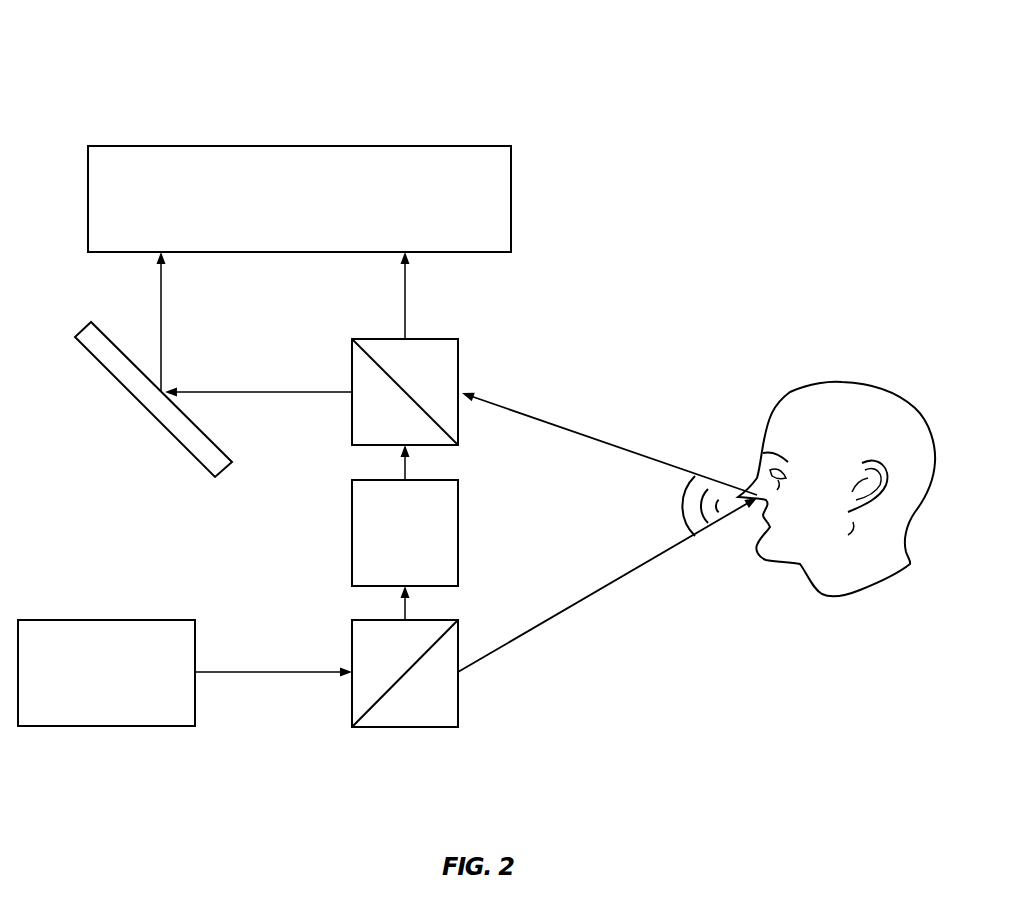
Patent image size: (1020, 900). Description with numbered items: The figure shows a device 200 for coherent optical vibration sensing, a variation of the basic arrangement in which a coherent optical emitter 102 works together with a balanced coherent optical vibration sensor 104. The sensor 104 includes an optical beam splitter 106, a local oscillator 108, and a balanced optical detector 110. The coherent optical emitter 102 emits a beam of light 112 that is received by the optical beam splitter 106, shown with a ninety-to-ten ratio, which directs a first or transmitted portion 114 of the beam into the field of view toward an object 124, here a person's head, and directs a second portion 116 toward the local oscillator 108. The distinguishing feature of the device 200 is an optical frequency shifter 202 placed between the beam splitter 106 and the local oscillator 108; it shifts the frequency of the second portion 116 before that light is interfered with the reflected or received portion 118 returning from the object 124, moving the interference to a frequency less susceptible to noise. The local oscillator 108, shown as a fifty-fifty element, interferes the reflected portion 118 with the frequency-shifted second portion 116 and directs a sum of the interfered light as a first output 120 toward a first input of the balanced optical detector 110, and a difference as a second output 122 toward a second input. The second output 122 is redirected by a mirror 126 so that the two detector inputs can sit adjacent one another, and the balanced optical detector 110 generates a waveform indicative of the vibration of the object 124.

The device 200 is at (146, 60).
The balanced coherent optical vibration sensor 104 is at (337, 167).
The balanced optical detector 110 is at (512, 200).
The second output 122 is at (163, 282).
The first output 120 is at (407, 282).
The local oscillator 108 is at (460, 356).
The mirror 126 is at (168, 432).
The optical frequency shifter 202 is at (351, 529).
The second portion of the beam of light 116 is at (403, 599).
The coherent optical emitter 102 is at (110, 618).
The beam of light 112 is at (272, 676).
The optical beam splitter 106 is at (460, 706).
The reflected portion of the beam of light 118 is at (616, 440).
The first portion of the beam of light 114 is at (610, 592).
The object 124 is at (851, 382).